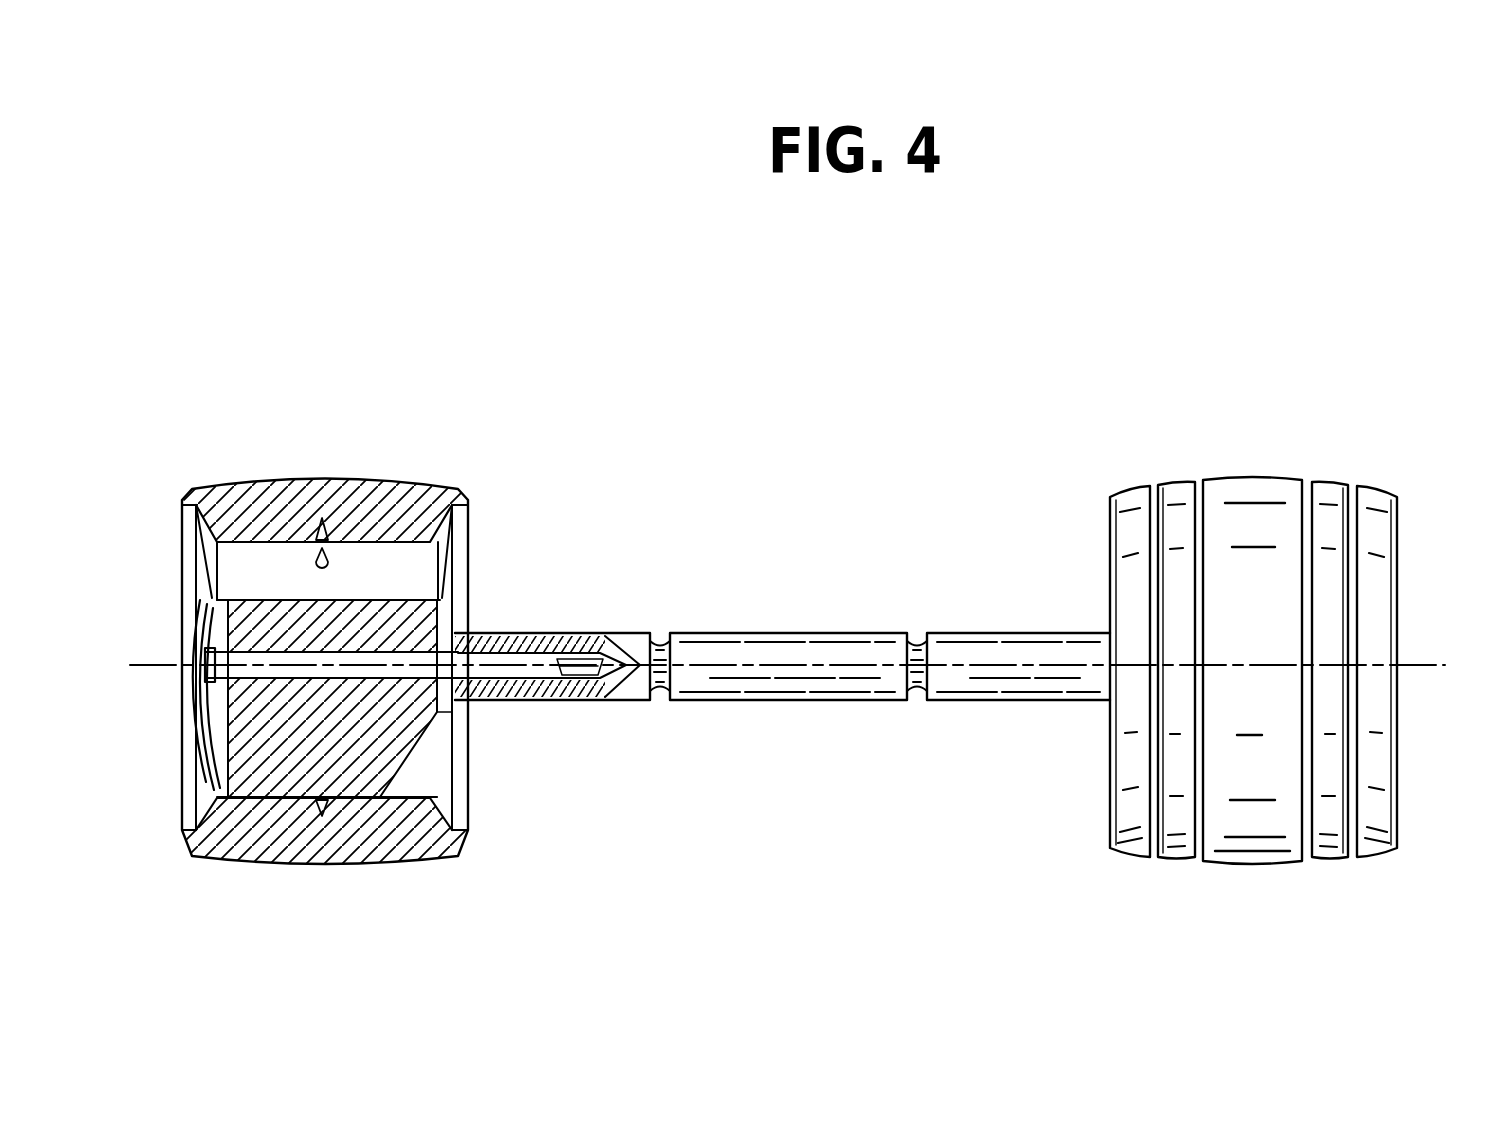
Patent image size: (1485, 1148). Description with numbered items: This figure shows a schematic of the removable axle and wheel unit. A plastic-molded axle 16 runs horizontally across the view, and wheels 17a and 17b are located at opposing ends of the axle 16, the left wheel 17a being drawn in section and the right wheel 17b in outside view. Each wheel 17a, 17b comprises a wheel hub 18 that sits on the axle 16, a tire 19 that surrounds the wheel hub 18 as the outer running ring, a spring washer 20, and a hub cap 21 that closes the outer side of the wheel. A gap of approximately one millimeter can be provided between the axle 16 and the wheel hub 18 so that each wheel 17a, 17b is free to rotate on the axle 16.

The axle 16 is at (813, 714).
The wheel 17a is at (294, 449).
The wheel 17b is at (1219, 450).
The wheel hub 18 is at (375, 605).
The tire 19 is at (423, 487).
The spring washer 20 is at (235, 600).
The hub cap 21 is at (200, 770).